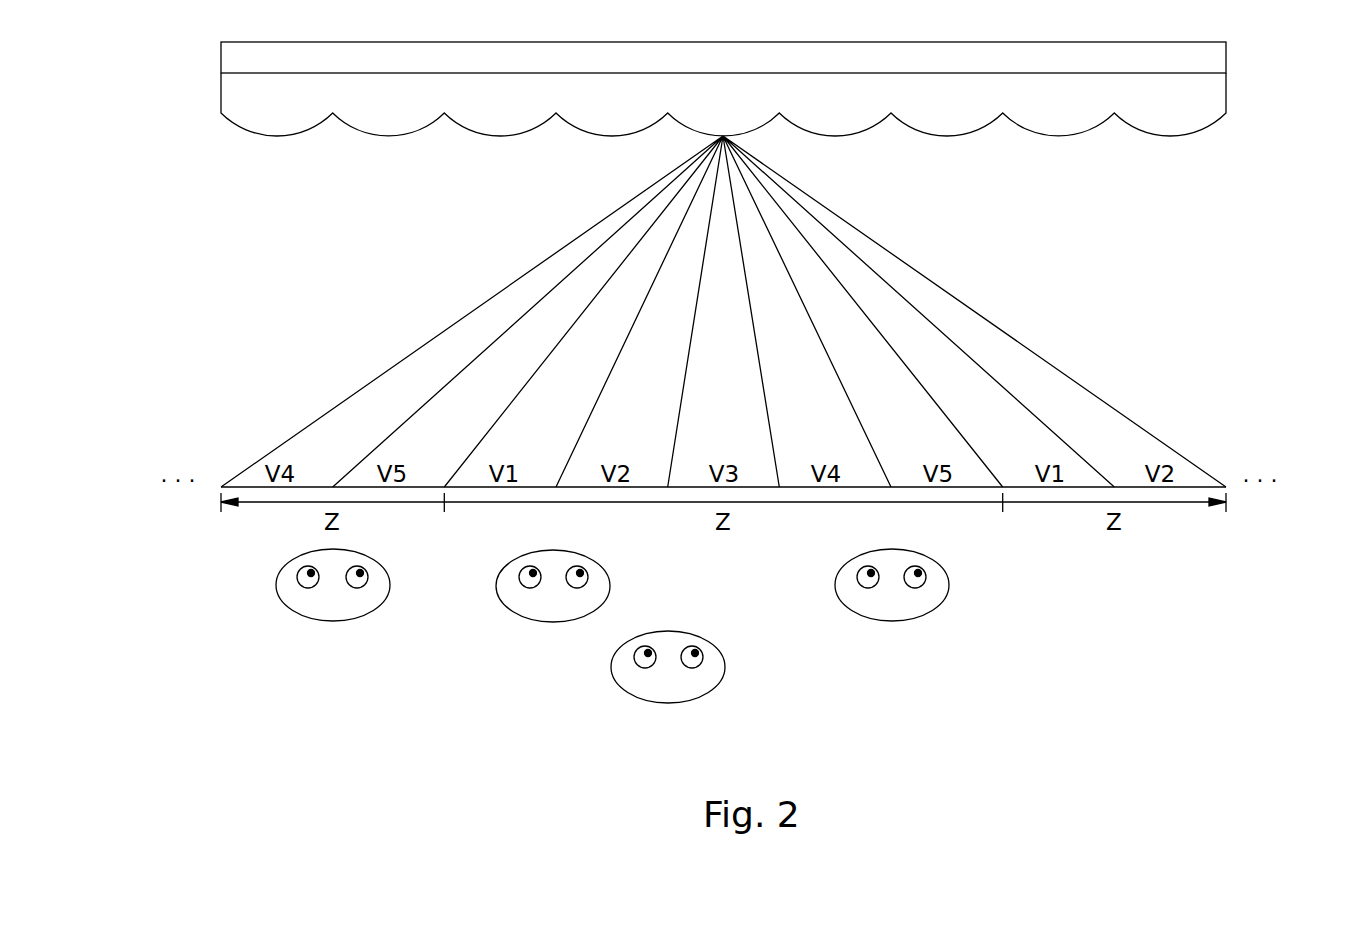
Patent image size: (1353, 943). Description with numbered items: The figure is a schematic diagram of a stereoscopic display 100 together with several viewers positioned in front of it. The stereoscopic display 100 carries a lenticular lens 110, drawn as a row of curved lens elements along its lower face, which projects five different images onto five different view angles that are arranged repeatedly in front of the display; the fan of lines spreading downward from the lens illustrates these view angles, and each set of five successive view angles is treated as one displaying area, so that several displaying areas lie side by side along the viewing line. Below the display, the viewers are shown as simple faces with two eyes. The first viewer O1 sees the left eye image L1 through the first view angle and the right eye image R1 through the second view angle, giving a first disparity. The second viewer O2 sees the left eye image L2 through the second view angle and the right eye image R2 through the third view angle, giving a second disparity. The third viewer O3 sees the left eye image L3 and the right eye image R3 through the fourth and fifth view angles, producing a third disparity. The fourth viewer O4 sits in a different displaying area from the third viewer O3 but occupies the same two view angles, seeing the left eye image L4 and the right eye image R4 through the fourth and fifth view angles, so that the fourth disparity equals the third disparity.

The stereoscopic display 100 is at (1227, 57).
The lenticular lens 110 is at (1227, 92).
The first viewer O1 is at (523, 603).
The second viewer O2 is at (637, 684).
The third viewer O3 is at (861, 603).
The fourth viewer O4 is at (303, 603).
The left eye image L1 is at (532, 611).
The right eye image R1 is at (574, 611).
The left eye image L2 is at (646, 692).
The right eye image R2 is at (689, 692).
The left eye image L3 is at (870, 611).
The right eye image R3 is at (912, 611).
The left eye image L4 is at (310, 611).
The right eye image R4 is at (354, 611).